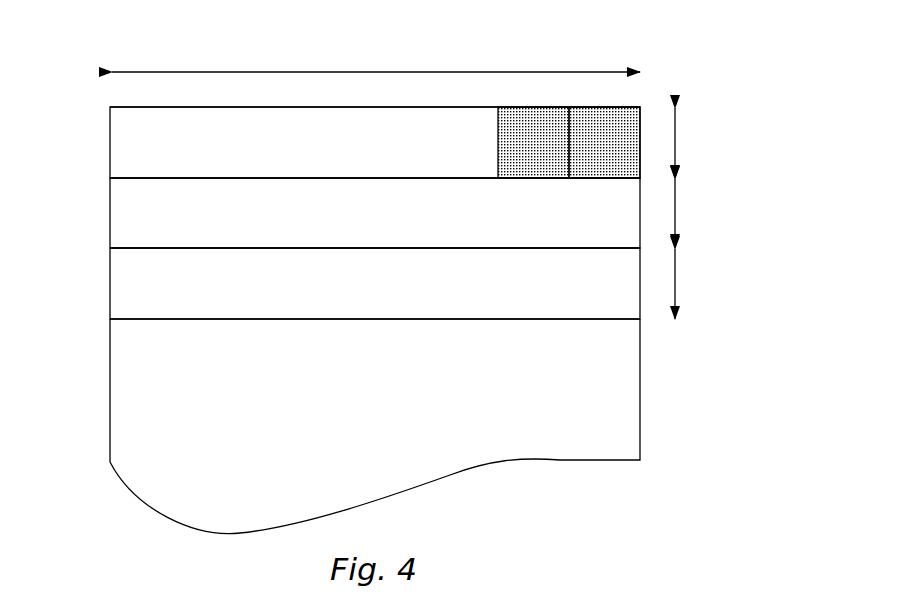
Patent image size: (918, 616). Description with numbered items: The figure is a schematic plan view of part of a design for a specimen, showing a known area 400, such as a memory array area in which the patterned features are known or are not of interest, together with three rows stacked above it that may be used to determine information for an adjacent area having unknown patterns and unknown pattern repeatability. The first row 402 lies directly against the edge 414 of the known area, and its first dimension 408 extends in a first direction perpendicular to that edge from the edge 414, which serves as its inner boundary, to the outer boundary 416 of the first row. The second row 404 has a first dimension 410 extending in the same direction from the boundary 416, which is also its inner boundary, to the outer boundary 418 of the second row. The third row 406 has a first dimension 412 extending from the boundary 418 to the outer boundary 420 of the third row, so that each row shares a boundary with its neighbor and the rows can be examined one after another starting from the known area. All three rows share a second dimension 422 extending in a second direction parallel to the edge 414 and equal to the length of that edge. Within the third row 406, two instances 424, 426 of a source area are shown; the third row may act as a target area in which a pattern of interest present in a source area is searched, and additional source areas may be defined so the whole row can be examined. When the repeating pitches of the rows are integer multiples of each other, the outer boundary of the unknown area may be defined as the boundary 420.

The known area 400 is at (375, 426).
The first row 402 is at (375, 283).
The second row 404 is at (375, 213).
The third row 406 is at (375, 142).
The first dimension of the first row 408 is at (677, 283).
The first dimension of the second row 410 is at (677, 222).
The first dimension of the third row 412 is at (677, 142).
The edge of the known area 414 is at (135, 319).
The outer boundary of the first row 416 is at (140, 248).
The outer boundary of the second row 418 is at (135, 178).
The outer boundary of the third row 420 is at (125, 107).
The second dimension 422 is at (190, 72).
The instance of a source area 424 is at (605, 140).
The instance of a source area 426 is at (535, 142).